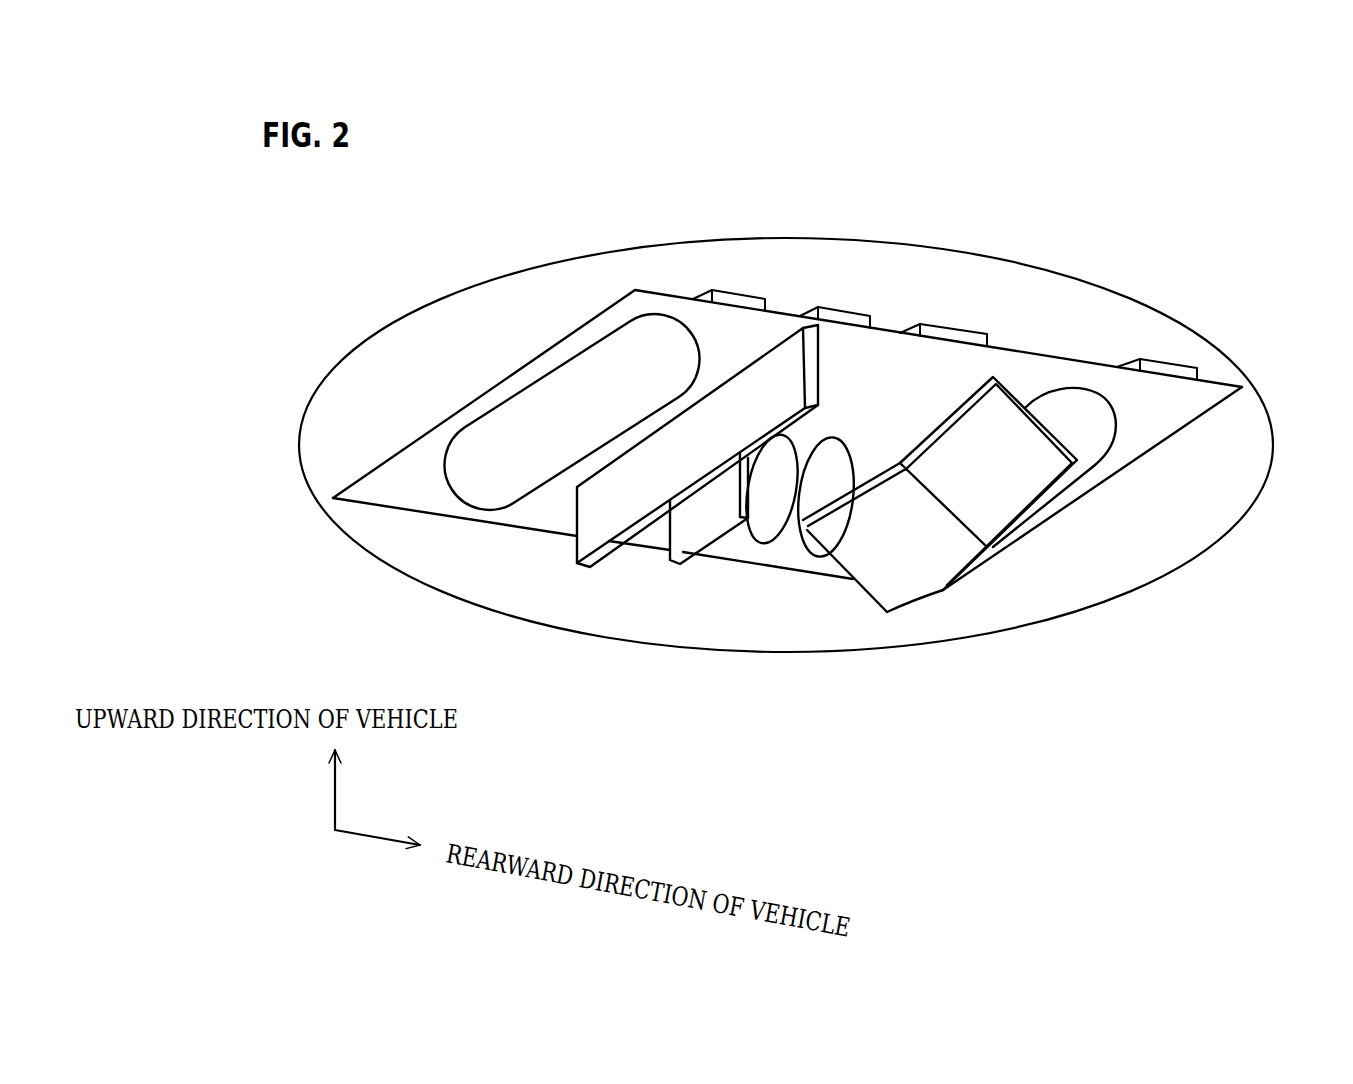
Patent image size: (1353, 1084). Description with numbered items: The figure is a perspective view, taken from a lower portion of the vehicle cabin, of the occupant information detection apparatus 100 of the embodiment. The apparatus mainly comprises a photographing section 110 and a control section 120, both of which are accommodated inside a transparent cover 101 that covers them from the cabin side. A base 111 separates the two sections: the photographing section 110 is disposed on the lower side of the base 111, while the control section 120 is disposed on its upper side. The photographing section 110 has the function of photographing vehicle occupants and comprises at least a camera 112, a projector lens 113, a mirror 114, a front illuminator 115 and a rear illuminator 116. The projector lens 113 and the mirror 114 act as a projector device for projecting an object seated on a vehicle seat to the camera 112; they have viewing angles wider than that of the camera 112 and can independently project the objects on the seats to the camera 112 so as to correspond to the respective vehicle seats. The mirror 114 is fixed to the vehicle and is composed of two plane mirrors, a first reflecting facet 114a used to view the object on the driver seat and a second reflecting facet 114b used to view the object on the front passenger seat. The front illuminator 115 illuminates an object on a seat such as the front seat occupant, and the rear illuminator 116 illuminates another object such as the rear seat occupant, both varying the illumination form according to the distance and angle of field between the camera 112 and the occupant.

The occupant information detection apparatus 100 is at (880, 198).
The transparent cover 101 is at (1155, 317).
The photographing section 110 is at (643, 598).
The base 111 is at (1157, 407).
The camera 112 is at (743, 537).
The projector lens 113 is at (819, 557).
The mirror 114 is at (913, 600).
The first reflecting facet 114a is at (883, 588).
The second reflecting facet 114b is at (995, 520).
The front illuminator 115 is at (499, 505).
The rear illuminator 116 is at (1100, 473).
The control section 120 is at (995, 333).